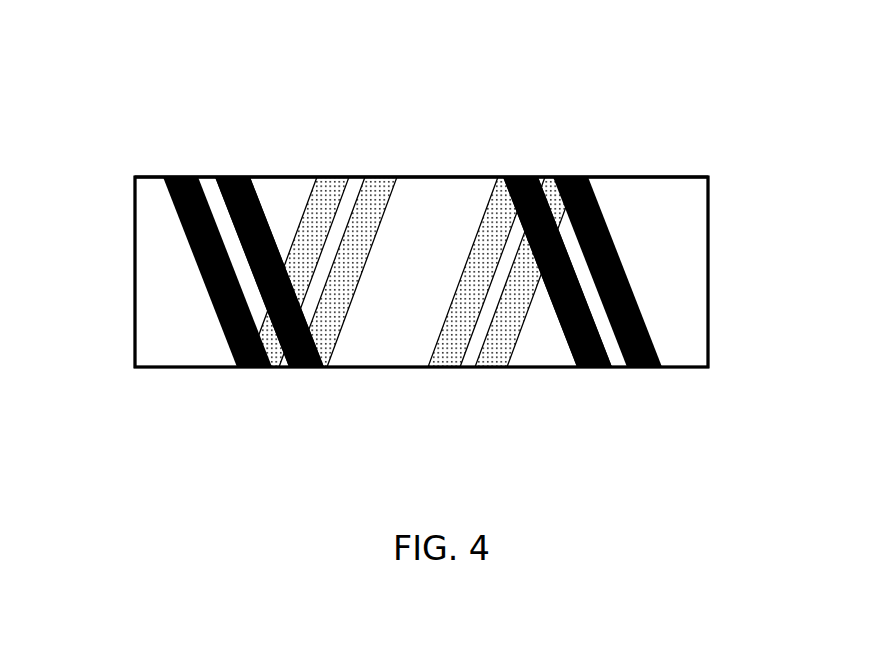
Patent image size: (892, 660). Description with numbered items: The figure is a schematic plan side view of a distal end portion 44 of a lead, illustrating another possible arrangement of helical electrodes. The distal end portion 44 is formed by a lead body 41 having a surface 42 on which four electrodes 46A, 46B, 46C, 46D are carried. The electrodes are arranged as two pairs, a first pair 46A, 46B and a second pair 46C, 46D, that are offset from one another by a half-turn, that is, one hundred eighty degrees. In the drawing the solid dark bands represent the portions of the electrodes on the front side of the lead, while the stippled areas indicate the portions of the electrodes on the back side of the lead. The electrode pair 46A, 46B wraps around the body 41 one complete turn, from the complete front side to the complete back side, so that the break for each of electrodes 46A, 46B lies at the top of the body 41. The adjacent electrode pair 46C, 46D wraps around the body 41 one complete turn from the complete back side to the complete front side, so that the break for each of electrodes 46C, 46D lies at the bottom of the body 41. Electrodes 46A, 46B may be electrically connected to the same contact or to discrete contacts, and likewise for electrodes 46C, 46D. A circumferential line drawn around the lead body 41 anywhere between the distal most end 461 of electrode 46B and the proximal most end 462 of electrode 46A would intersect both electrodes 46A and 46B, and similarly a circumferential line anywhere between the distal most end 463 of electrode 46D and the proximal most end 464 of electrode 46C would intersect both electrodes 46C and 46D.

The lead body 41 is at (658, 176).
The surface 42 is at (417, 176).
The distal end portion 44 is at (549, 116).
The electrode 46A is at (182, 176).
The electrode 46B is at (233, 176).
The electrode 46C is at (590, 369).
The electrode 46D is at (642, 369).
The distal most end of electrode 46B 461 is at (222, 168).
The proximal most end of electrode 46A 462 is at (345, 168).
The distal most end of electrode 46D 463 is at (480, 376).
The proximal most end of electrode 46C 464 is at (607, 376).